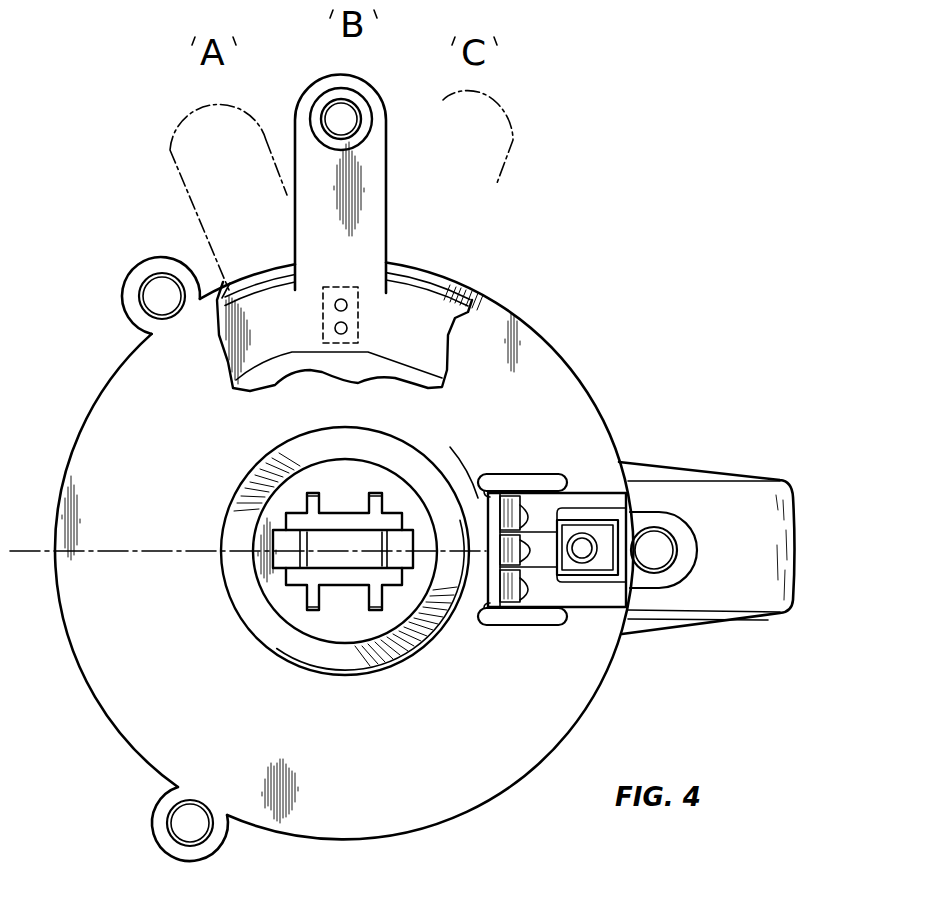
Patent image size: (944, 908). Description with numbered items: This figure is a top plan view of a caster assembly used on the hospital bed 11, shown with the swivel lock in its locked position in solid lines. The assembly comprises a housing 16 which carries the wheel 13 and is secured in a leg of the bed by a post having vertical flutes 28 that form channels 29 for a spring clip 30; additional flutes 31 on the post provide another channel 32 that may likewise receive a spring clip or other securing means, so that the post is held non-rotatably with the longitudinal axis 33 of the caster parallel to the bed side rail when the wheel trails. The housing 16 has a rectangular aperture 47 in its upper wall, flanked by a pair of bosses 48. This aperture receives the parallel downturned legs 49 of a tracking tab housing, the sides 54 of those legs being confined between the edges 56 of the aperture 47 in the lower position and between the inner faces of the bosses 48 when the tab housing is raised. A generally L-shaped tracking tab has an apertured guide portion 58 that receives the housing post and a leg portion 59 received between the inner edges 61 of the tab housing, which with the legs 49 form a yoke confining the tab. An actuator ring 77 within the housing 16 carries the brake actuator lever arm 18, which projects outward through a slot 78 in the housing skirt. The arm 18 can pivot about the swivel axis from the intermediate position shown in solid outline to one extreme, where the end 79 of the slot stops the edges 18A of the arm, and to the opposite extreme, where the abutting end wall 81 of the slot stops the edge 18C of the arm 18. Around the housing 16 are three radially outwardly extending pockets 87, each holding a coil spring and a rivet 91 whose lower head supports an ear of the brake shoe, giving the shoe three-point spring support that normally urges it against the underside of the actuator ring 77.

The hospital bed 11 is at (778, 907).
The wheel 13 is at (793, 520).
The housing 16 is at (93, 405).
The brake actuator lever arm 18 is at (335, 170).
The edges of the arm 18A is at (295, 158).
The edge of the arm 18C is at (386, 192).
The vertical flutes 28 is at (403, 513).
The channels 29 is at (283, 525).
The spring clip 30 is at (280, 555).
The additional flutes 31 is at (373, 493).
The channel 32 is at (292, 462).
The longitudinal axis 33 is at (37, 568).
The aperture 47 is at (454, 463).
The bosses 48 is at (563, 497).
The downturned legs 49 is at (518, 530).
The sides of the tab housing legs 54 is at (505, 492).
The edges of the aperture 56 is at (493, 510).
The apertured guide portion 58 is at (553, 477).
The leg portion 59 is at (507, 552).
The inner edges 61 is at (543, 548).
The actuator ring 77 is at (387, 310).
The slot 78 is at (427, 283).
The end of the slot 79 is at (234, 280).
The abutting end wall 81 is at (438, 287).
The pockets 87 is at (158, 820).
The rivet 91 is at (160, 300).